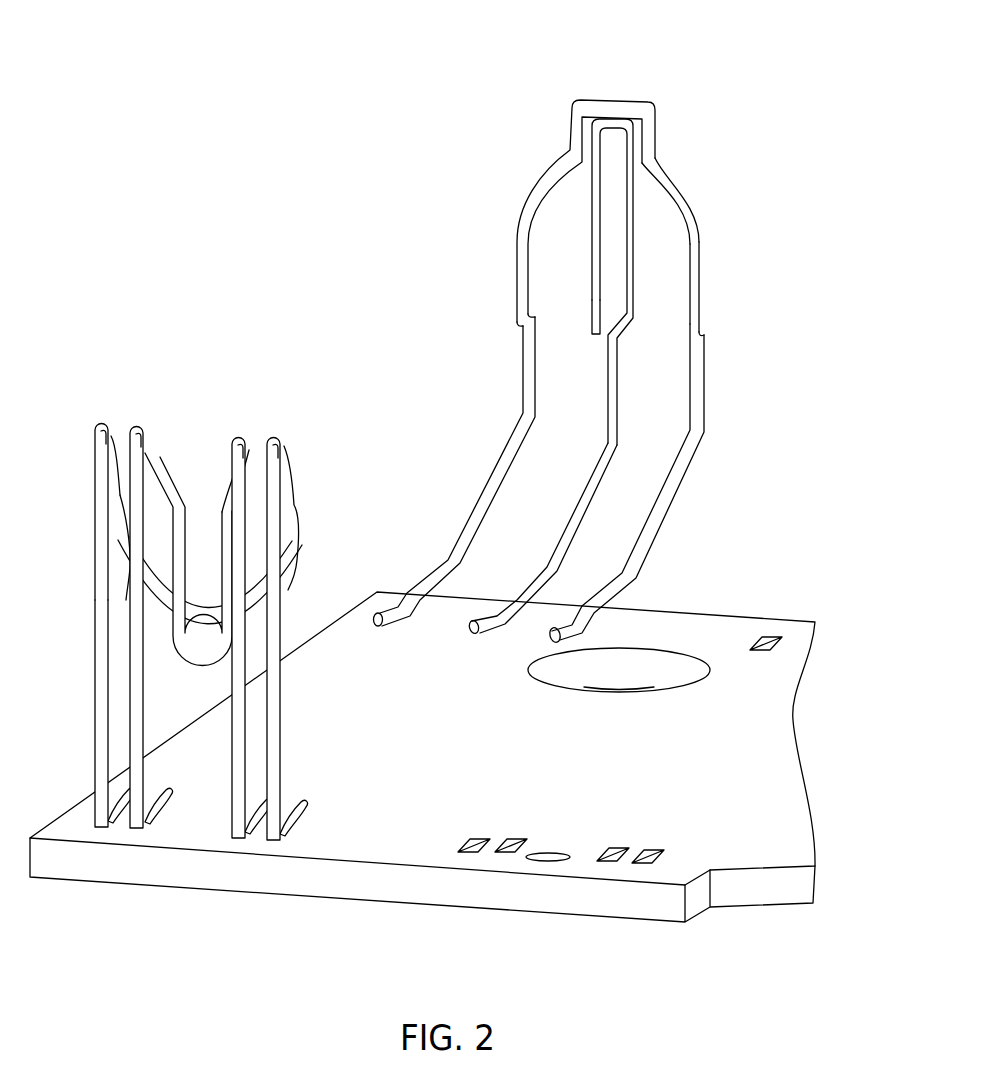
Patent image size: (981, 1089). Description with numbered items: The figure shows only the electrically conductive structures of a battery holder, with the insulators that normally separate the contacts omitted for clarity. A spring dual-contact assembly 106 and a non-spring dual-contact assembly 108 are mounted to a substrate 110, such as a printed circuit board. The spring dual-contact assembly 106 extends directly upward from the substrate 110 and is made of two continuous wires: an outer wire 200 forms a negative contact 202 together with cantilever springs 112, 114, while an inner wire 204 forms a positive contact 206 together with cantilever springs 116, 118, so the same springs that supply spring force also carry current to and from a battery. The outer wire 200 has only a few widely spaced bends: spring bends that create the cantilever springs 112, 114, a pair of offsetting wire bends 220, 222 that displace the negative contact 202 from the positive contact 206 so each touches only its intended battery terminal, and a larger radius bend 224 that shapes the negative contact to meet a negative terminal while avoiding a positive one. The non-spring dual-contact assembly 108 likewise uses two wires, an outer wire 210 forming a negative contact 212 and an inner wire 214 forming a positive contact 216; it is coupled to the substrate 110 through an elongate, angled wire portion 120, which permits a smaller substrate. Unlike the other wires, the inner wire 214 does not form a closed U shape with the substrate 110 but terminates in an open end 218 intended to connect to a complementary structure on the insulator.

The spring dual-contact assembly 106 is at (189, 569).
The non-spring dual-contact assembly 108 is at (574, 335).
The substrate 110 is at (782, 760).
The cantilever spring 112 is at (284, 437).
The cantilever spring 114 is at (88, 596).
The cantilever spring 116 is at (246, 437).
The cantilever spring 118 is at (146, 425).
The elongate, angled wire portion 120 is at (683, 492).
The outer wire 200 is at (88, 566).
The negative contact 202 is at (84, 518).
The inner wire 204 is at (123, 641).
The positive contact 206 is at (187, 524).
The outer wire 210 is at (645, 218).
The negative contact 212 is at (693, 213).
The inner wire 214 is at (624, 397).
The positive contact 216 is at (643, 282).
The open end 218 is at (591, 337).
The offsetting wire bend 220 is at (297, 507).
The offsetting wire bend 222 is at (118, 493).
The larger radius bend 224 is at (153, 605).